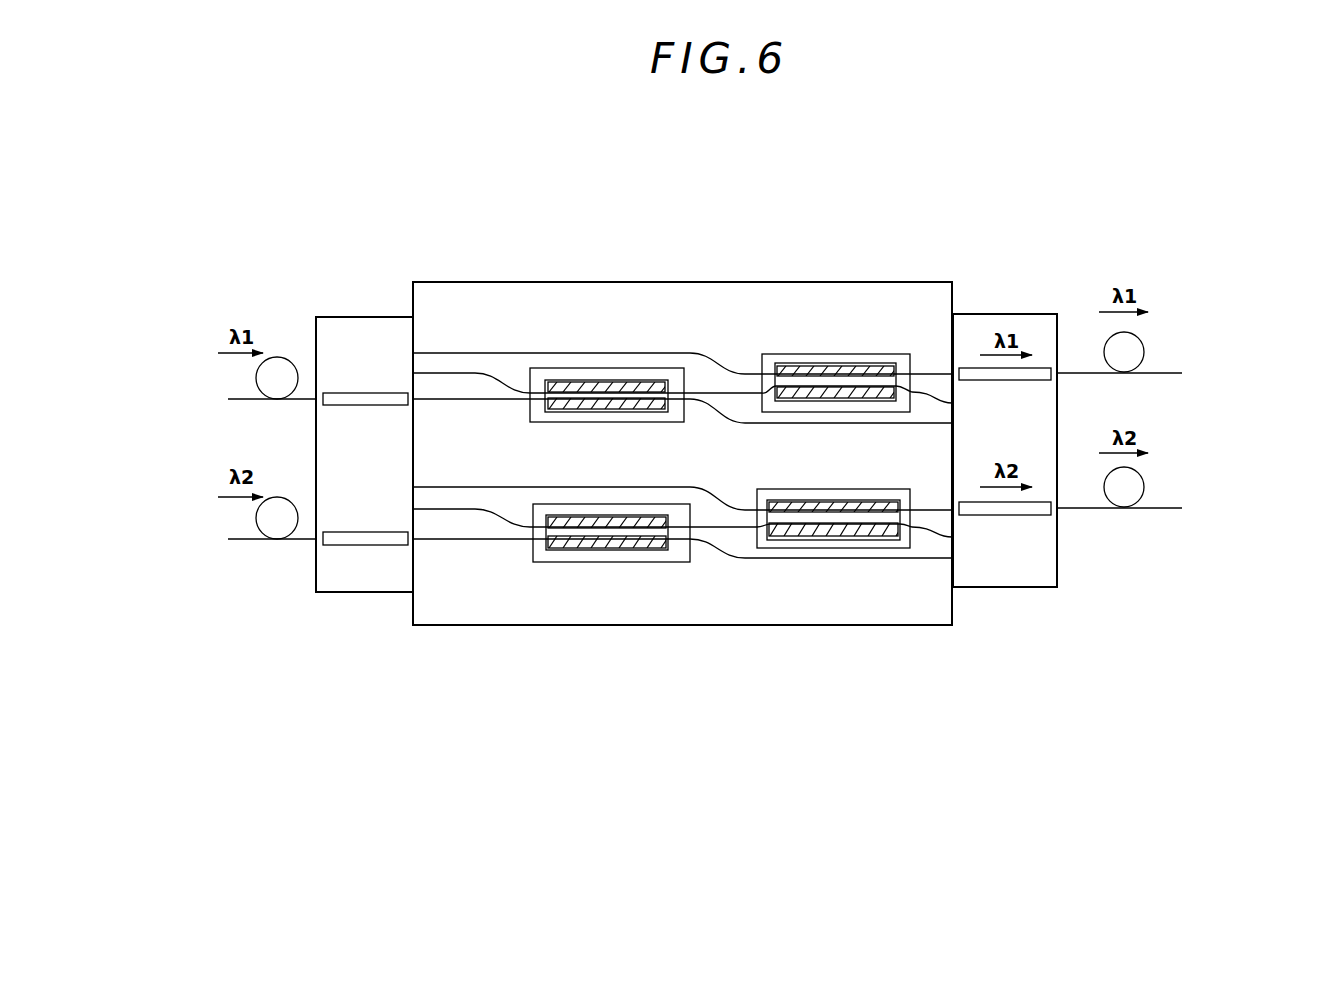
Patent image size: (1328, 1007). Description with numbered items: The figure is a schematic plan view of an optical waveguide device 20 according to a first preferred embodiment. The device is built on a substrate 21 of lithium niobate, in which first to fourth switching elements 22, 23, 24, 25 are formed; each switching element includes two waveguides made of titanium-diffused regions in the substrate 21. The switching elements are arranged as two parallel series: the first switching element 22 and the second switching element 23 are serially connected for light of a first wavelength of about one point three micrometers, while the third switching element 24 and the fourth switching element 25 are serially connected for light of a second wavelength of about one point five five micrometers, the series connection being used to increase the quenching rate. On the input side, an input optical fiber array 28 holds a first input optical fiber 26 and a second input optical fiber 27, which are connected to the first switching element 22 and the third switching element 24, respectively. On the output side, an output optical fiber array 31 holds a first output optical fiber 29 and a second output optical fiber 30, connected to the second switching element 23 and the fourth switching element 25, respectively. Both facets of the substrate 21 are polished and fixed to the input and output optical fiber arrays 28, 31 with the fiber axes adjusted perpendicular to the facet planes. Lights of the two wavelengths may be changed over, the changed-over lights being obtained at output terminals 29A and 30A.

The optical waveguide device 20 is at (933, 282).
The substrate 21 is at (513, 282).
The first switching element 22 is at (617, 368).
The second switching element 23 is at (808, 354).
The third switching element 24 is at (582, 562).
The fourth switching element 25 is at (800, 548).
The first input optical fiber 26 is at (311, 398).
The second input optical fiber 27 is at (252, 541).
The input optical fiber array 28 is at (362, 592).
The first output optical fiber 29 is at (1078, 373).
The output terminal 29A is at (959, 403).
The second output optical fiber 30 is at (1100, 508).
The output terminal 30A is at (959, 537).
The output optical fiber array 31 is at (1000, 587).